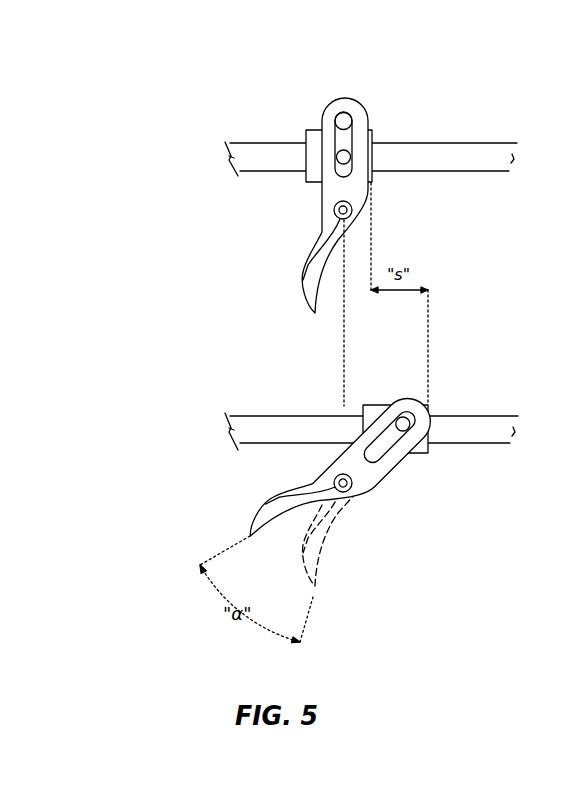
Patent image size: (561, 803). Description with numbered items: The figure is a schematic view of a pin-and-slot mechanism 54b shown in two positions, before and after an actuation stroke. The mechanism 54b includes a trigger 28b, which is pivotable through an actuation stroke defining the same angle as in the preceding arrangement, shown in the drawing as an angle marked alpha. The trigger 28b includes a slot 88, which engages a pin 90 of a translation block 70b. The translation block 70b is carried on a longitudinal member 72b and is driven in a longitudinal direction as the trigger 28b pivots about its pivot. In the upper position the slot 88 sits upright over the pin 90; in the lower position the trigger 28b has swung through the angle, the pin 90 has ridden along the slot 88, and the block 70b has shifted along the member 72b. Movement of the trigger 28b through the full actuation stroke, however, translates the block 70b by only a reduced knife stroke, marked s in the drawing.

The pin-and-slot mechanism 54b is at (316, 303).
The translation block 70b is at (310, 135).
The rail 72b is at (455, 158).
The slot 88 is at (348, 119).
The pin 90 is at (348, 154).
The trigger 28b is at (318, 233).